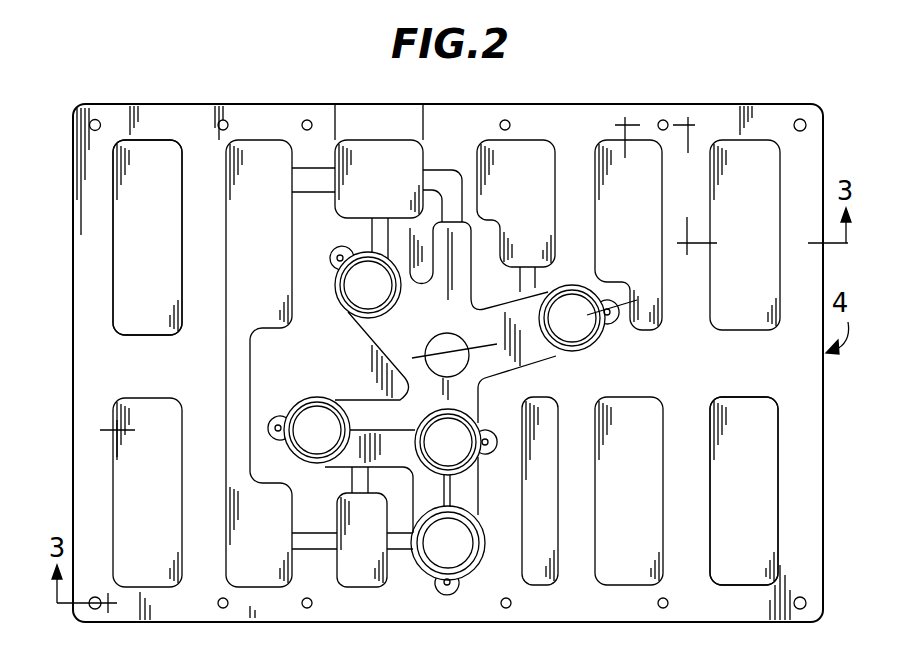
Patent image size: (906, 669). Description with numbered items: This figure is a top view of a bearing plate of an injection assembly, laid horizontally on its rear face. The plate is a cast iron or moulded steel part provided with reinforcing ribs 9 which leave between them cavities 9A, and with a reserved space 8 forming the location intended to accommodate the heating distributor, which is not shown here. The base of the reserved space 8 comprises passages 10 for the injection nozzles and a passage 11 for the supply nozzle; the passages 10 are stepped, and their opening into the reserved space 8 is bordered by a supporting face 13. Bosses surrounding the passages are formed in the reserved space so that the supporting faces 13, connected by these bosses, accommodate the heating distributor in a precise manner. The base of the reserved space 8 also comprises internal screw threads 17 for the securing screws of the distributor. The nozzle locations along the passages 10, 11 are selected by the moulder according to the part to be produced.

The reserved space 8 is at (483, 342).
The reinforcing ribs 9 is at (195, 227).
The cavities 9A is at (761, 455).
The passages for the injection nozzles 10 is at (373, 338).
The passage for the supply nozzle 11 is at (447, 340).
The supporting face 13 is at (348, 313).
The internal screw threads 17 is at (336, 257).